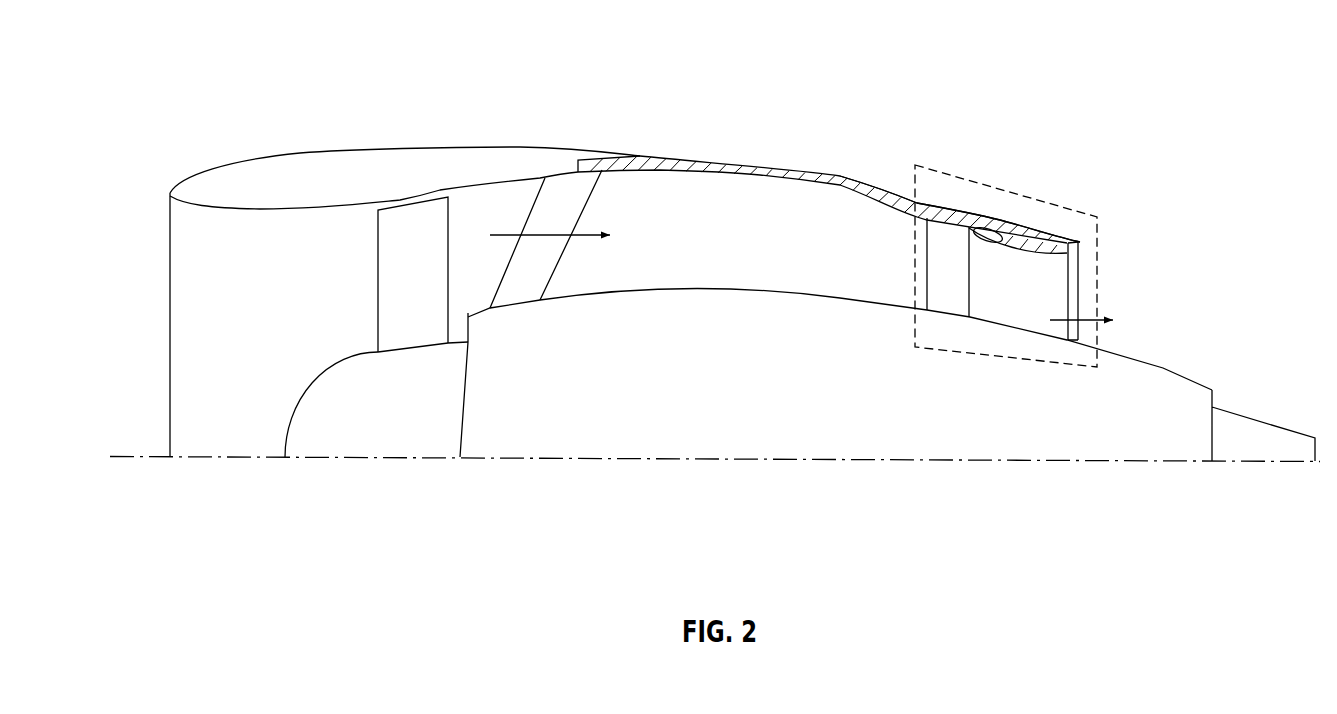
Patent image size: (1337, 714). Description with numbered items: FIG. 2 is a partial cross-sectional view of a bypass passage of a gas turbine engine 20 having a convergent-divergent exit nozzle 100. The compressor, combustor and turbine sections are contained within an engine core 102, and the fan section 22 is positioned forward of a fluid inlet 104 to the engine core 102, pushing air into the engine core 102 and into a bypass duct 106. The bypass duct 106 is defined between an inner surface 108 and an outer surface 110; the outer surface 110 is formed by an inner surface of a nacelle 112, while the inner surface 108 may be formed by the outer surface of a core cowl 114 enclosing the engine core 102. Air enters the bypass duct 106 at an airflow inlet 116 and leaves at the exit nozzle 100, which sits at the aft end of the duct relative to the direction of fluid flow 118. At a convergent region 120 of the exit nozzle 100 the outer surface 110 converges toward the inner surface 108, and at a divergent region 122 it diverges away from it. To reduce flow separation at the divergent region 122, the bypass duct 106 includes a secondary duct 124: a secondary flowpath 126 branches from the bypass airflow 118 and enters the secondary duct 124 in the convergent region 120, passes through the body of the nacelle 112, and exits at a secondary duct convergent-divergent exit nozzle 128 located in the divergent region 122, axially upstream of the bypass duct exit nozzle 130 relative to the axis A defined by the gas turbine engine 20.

The gas turbine engine 20 is at (200, 82).
The fan section 22 is at (373, 445).
The convergent-divergent exit nozzle 100 is at (990, 187).
The engine core 102 is at (653, 446).
The fluid inlet 104 is at (460, 423).
The bypass duct 106 is at (753, 188).
The inner surface 108 is at (608, 297).
The outer surface 110 is at (855, 182).
The nacelle 112 is at (707, 163).
The core cowl 114 is at (787, 394).
The airflow inlet 116 is at (177, 240).
The direction of fluid flow 118 is at (582, 238).
The convergent region 120 is at (1000, 220).
The divergent region 122 is at (1033, 257).
The secondary duct 124 is at (1047, 227).
The secondary flowpath 126 is at (953, 227).
The secondary duct convergent-divergent exit nozzle 128 is at (1085, 237).
The exit nozzle of the bypass duct 130 is at (1078, 282).
The axis A is at (133, 455).